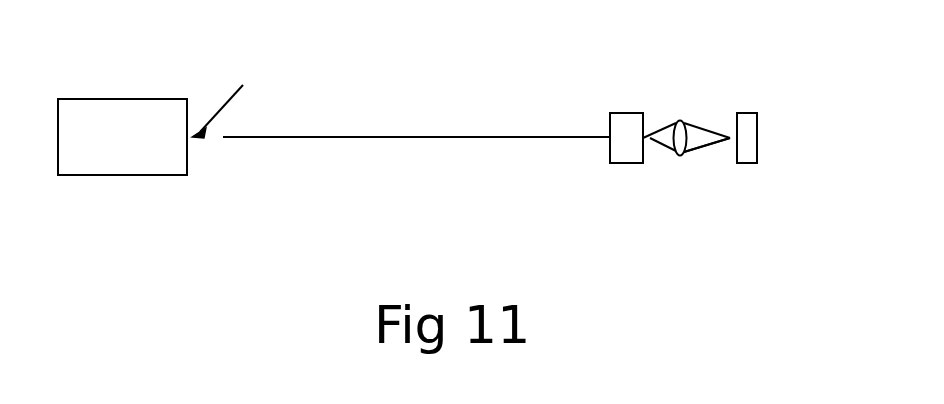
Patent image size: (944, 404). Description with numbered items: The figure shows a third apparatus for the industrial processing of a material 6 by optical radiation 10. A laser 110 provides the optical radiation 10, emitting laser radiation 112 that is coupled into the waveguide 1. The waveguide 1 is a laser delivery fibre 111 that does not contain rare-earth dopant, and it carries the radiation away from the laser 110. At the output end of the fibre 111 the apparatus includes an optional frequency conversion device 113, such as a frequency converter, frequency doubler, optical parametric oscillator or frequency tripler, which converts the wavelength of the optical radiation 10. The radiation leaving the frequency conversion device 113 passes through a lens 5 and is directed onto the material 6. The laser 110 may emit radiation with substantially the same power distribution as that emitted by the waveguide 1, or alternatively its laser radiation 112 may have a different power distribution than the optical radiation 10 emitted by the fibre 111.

The laser 110 is at (116, 175).
The laser radiation 112 is at (245, 97).
The waveguide 1 is at (403, 137).
The laser delivery fibre 111 is at (533, 137).
The frequency conversion device 113 is at (628, 113).
The lens 5 is at (681, 120).
The optical radiation 10 is at (705, 146).
The material 6 is at (757, 158).